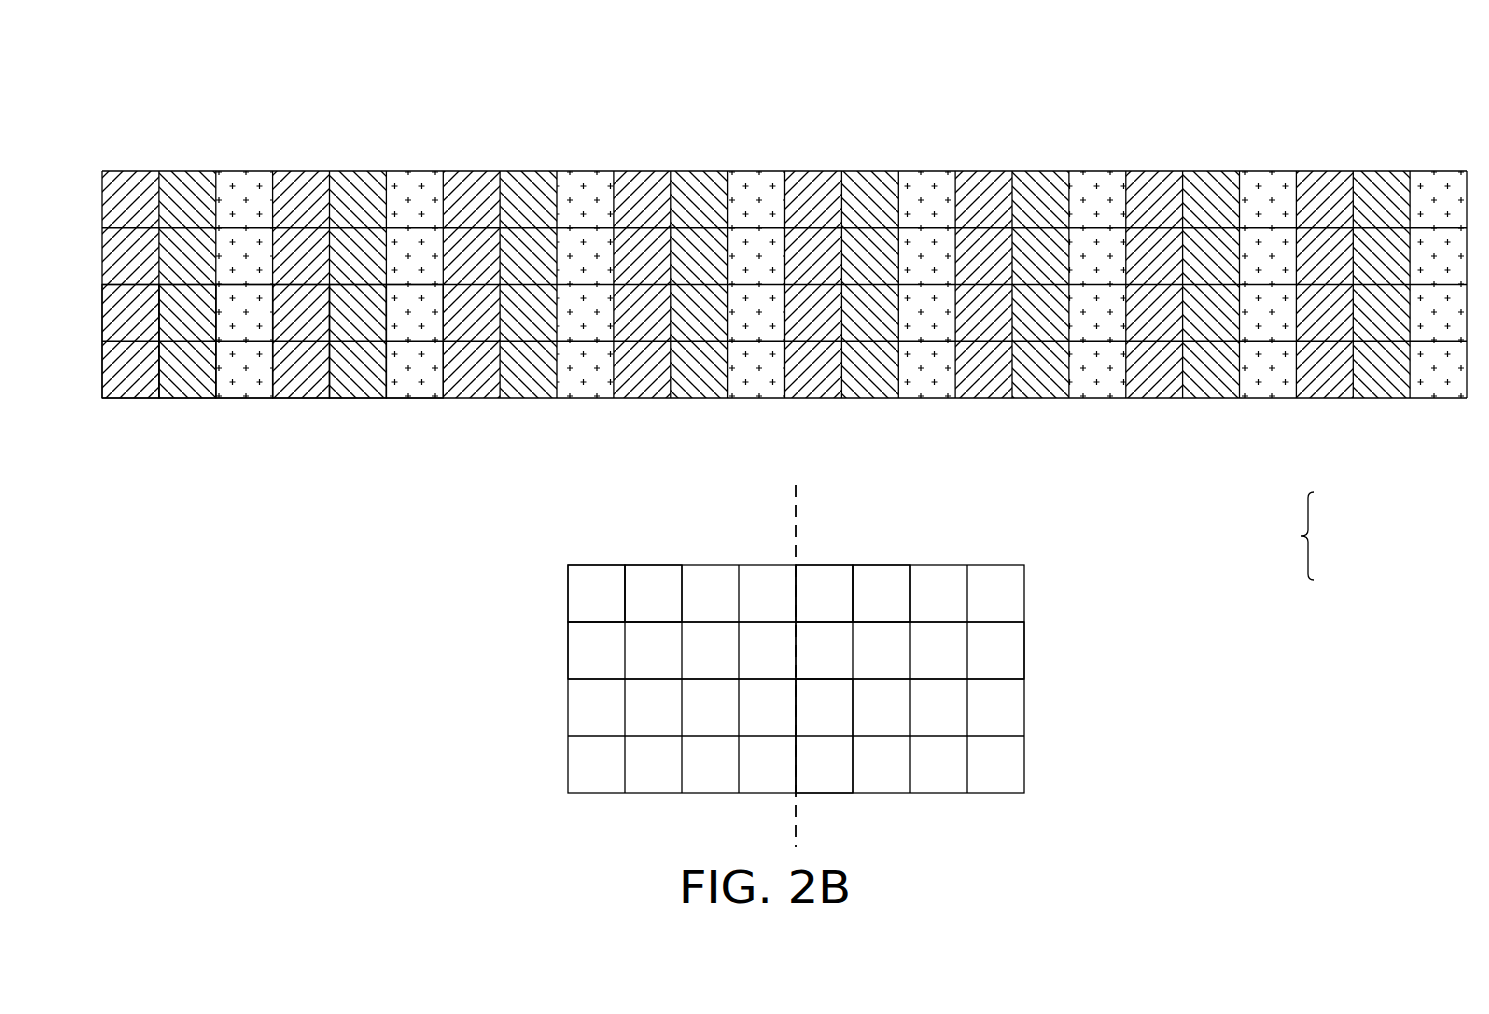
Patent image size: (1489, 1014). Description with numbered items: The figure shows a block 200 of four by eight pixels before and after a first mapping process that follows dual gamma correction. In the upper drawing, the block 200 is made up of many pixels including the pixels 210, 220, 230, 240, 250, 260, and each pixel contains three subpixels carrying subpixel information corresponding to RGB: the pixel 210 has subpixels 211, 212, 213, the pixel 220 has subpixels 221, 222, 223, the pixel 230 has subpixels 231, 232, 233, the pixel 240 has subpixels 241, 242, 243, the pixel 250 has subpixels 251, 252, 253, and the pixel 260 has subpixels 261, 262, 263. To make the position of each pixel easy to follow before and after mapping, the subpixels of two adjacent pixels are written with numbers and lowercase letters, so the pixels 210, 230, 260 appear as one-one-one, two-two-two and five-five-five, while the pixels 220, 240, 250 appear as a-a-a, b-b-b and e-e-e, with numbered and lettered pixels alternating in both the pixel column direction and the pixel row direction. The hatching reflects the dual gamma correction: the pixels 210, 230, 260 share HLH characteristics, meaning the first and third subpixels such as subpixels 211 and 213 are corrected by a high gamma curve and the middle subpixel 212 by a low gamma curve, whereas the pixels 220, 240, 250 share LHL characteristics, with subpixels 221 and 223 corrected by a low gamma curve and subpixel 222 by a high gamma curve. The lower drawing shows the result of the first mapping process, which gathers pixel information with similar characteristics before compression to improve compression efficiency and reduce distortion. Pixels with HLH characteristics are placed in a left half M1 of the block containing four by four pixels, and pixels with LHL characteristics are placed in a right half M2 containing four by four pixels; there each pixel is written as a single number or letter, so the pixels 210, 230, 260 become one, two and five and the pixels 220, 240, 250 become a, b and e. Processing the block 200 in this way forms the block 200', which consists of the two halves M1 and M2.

The block 200 is at (784, 441).
The block after first mapping process 200' is at (941, 636).
The pixel 210 is at (110, 99).
The subpixel 211 is at (132, 181).
The subpixel 212 is at (187, 181).
The subpixel 213 is at (242, 181).
The pixel 220 is at (280, 99).
The subpixel 221 is at (303, 181).
The subpixel 222 is at (357, 181).
The subpixel 223 is at (410, 181).
The pixel 230 is at (443, 99).
The subpixel 231 is at (474, 181).
The subpixel 232 is at (528, 181).
The subpixel 233 is at (585, 181).
The pixel 240 is at (760, 99).
The subpixel 241 is at (645, 181).
The subpixel 242 is at (698, 181).
The subpixel 243 is at (755, 181).
The pixel 250 is at (110, 472).
The subpixel 251 is at (125, 288).
The subpixel 252 is at (180, 288).
The subpixel 253 is at (243, 288).
The pixel 260 is at (280, 472).
The subpixel 261 is at (298, 288).
The subpixel 262 is at (352, 288).
The subpixel 263 is at (417, 288).
The left half of the block M1 is at (554, 507).
The right half of the block M2 is at (1013, 507).